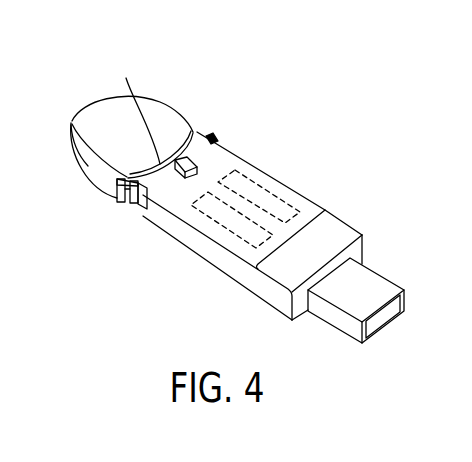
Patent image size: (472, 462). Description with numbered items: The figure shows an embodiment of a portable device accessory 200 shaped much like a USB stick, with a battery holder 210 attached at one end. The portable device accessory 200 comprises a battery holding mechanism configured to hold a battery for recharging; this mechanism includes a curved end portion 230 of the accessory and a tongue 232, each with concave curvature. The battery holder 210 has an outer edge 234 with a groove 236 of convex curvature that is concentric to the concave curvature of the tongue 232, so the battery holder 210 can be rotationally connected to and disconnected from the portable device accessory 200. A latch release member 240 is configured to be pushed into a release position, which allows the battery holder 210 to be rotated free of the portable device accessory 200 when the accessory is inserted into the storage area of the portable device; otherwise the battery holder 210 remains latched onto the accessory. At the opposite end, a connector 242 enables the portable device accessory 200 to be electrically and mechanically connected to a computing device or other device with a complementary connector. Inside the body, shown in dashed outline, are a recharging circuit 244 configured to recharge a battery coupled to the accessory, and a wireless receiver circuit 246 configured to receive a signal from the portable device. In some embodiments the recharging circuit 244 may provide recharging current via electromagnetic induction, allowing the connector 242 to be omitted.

The portable device accessory 200 is at (199, 131).
The battery holder 210 is at (103, 131).
The curved end portion 230 is at (137, 206).
The tongue 232 is at (117, 191).
The outer edge 234 is at (136, 112).
The groove 236 is at (72, 125).
The latch release member 240 is at (198, 164).
The connector 242 is at (383, 284).
The recharging circuit 244 is at (228, 222).
The wireless receiver circuit 246 is at (284, 200).